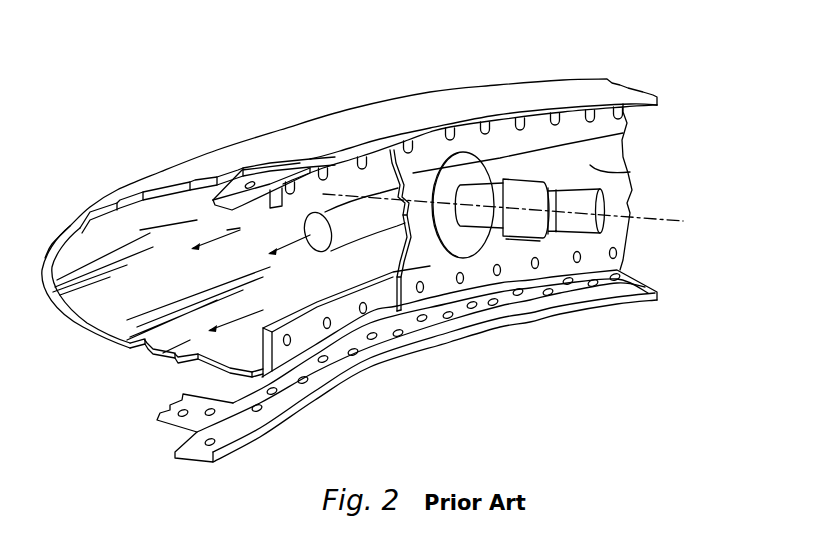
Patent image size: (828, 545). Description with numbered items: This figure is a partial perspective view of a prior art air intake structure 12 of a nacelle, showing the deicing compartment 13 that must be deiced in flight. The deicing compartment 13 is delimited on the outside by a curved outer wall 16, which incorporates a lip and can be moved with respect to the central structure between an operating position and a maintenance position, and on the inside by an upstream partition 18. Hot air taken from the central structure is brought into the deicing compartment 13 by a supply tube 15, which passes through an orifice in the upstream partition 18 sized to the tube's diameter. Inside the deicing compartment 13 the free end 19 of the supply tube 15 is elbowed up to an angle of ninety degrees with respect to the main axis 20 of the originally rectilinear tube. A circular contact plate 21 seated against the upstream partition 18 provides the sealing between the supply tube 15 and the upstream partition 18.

The air intake structure 12 is at (355, 103).
The deicing compartment 13 is at (137, 292).
The supply tube 15 is at (427, 200).
The outer wall 16 is at (498, 100).
The upstream partition 18 is at (632, 170).
The free end 19 is at (347, 222).
The main axis 20 is at (650, 222).
The contact plate 21 is at (627, 132).